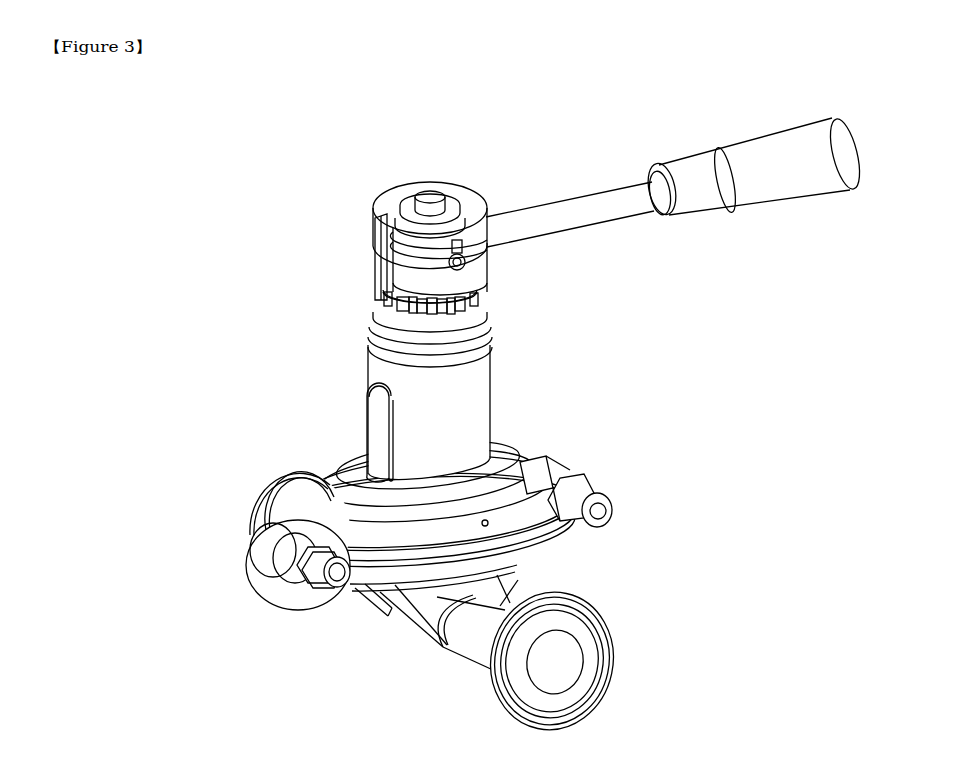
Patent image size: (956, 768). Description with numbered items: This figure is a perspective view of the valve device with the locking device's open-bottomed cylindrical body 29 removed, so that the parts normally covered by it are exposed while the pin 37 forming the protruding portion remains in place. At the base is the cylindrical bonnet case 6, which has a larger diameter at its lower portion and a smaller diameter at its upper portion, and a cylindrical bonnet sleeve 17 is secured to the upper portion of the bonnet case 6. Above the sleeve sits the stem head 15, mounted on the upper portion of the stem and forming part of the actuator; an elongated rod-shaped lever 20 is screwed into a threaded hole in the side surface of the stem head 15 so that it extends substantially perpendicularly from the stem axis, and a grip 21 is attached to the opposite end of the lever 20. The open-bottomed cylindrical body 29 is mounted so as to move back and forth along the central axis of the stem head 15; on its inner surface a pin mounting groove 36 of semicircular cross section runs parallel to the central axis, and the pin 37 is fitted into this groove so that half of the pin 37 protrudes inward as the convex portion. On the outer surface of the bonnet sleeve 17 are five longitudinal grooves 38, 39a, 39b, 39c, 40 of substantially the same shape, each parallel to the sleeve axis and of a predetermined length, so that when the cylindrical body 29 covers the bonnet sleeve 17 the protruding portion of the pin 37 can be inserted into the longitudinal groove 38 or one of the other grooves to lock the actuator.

The bonnet case 6 is at (467, 403).
The stem head 15 is at (443, 277).
The bonnet sleeve 17 is at (467, 312).
The lever 20 is at (584, 207).
The grip 21 is at (787, 177).
The open-bottomed cylindrical body 29 is at (400, 199).
The pin mounting groove 36 is at (383, 319).
The pin 37 is at (397, 265).
The longitudinal groove 38 is at (380, 307).
The longitudinal groove 39a is at (408, 305).
The longitudinal groove 39b is at (437, 308).
The longitudinal groove 39c is at (452, 312).
The longitudinal groove 40 is at (385, 405).